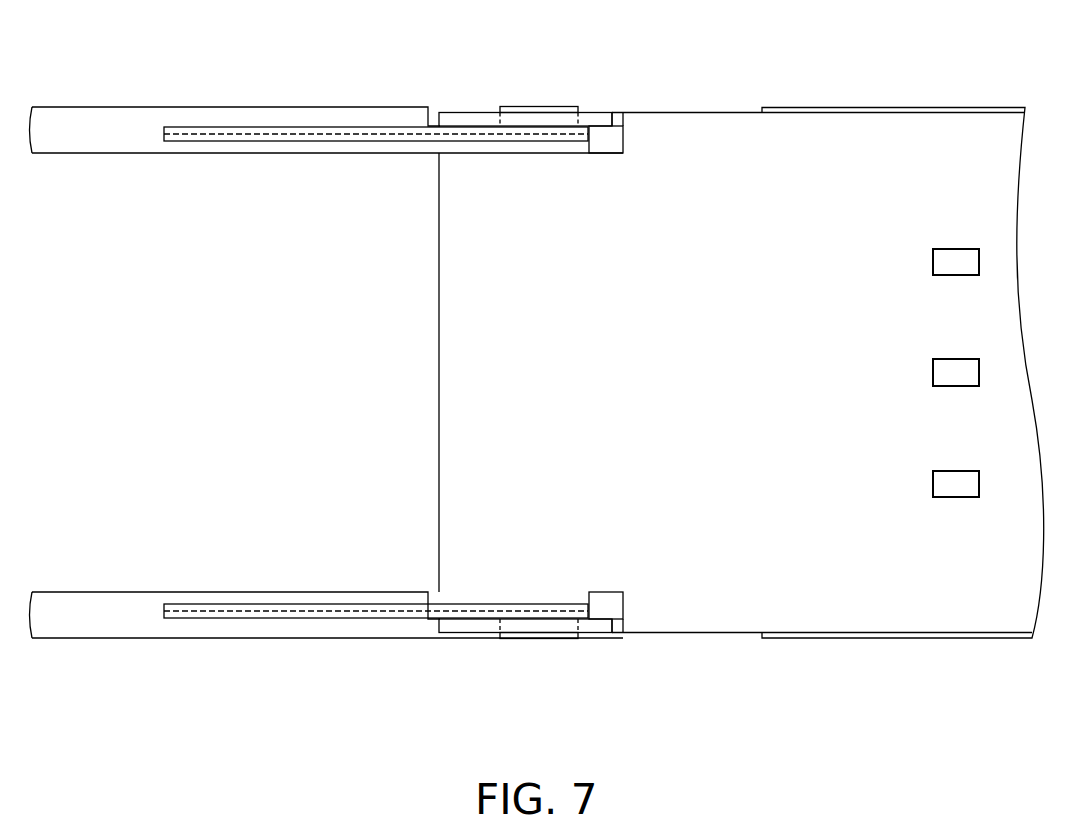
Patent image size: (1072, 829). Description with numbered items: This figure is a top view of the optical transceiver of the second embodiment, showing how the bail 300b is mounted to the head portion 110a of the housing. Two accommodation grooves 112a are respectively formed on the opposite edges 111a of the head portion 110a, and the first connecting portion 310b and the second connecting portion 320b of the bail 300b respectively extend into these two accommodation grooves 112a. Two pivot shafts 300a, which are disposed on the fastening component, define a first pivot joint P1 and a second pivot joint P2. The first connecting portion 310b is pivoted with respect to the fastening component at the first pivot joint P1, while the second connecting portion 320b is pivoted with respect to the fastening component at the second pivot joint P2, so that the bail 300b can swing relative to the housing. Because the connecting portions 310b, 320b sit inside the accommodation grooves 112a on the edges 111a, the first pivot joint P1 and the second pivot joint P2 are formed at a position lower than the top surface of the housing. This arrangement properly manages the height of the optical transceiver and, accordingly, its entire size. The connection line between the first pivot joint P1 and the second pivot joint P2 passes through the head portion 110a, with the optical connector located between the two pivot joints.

The bail 300b is at (135, 101).
The first connecting portion 310b is at (410, 106).
The second connecting portion 320b is at (409, 640).
The pivot shaft 300a is at (508, 106).
The first pivot joint P1 is at (541, 103).
The second pivot joint P2 is at (541, 643).
The accommodation groove 112a is at (615, 135).
The edge 111a is at (700, 110).
The head portion 110a is at (725, 554).